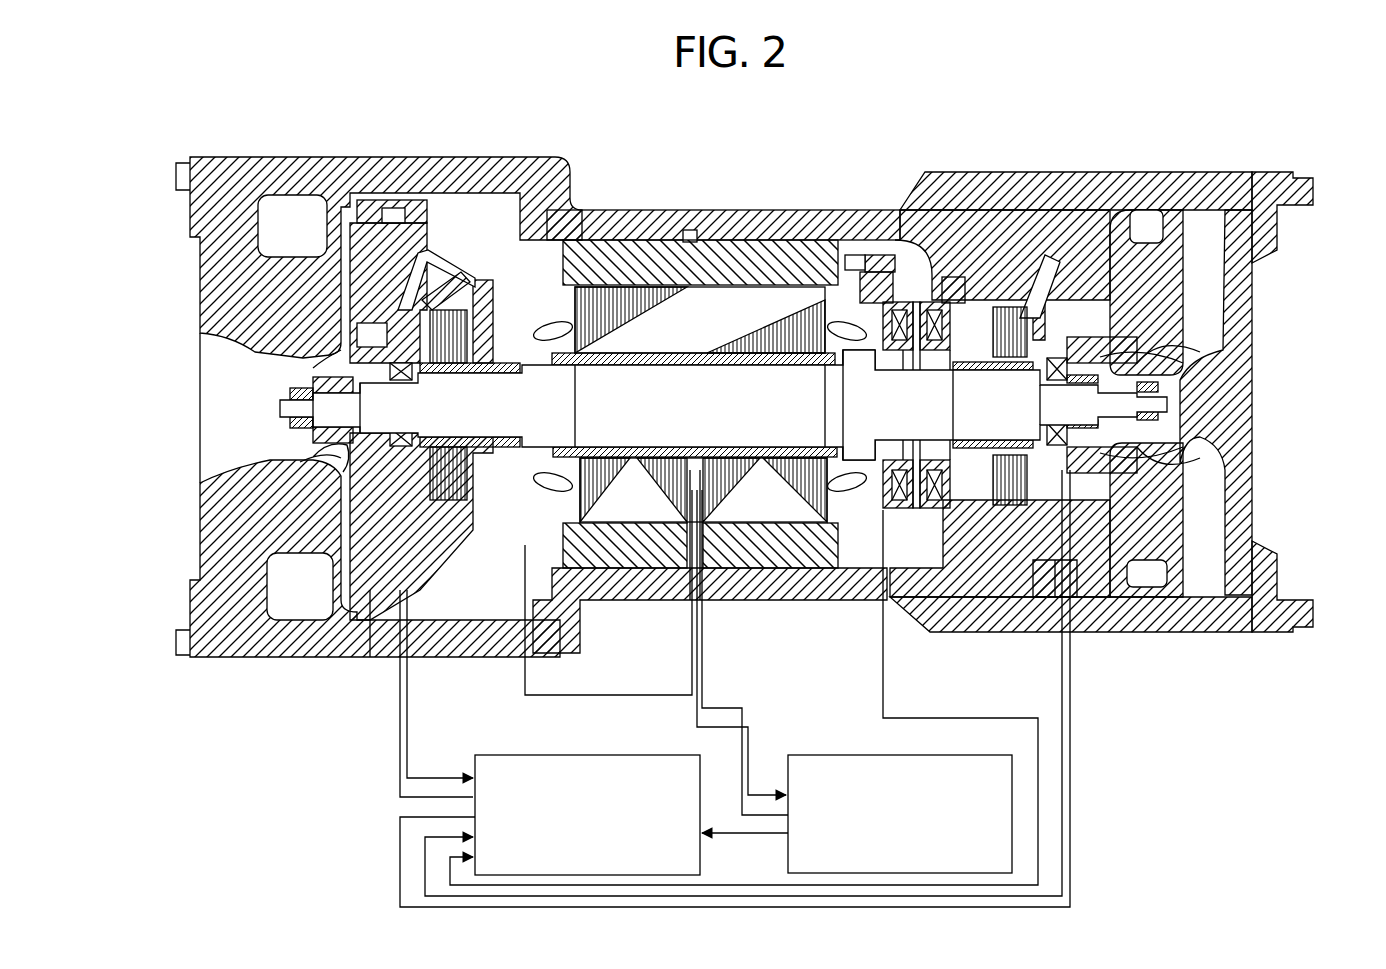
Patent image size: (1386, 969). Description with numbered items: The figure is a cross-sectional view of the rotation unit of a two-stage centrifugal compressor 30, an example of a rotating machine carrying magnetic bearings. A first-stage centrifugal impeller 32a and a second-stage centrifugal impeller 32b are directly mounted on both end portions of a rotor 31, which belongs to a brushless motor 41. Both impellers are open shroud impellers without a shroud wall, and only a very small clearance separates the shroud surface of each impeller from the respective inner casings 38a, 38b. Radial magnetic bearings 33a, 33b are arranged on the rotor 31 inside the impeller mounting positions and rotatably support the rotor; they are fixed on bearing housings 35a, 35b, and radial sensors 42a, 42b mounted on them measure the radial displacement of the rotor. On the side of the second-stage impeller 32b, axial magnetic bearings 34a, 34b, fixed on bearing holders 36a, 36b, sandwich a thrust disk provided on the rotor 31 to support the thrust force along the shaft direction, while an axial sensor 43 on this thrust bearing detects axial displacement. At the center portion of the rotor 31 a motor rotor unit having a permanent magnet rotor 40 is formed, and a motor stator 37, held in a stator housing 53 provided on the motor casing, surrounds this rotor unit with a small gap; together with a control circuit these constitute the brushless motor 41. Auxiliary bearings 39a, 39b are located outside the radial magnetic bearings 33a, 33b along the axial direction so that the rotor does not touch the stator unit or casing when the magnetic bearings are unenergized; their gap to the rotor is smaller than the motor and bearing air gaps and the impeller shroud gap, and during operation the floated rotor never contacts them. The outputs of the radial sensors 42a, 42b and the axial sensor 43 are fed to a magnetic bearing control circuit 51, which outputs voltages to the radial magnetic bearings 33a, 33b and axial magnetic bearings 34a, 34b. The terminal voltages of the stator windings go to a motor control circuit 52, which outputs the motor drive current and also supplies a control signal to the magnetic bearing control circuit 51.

The 2-stage centrifugal compressor 30 is at (986, 98).
The rotor 31 is at (632, 432).
The first-stage centrifugal impeller 32a is at (313, 368).
The second-stage centrifugal impeller 32b is at (1130, 372).
The radial magnetic bearing 33a is at (472, 345).
The radial magnetic bearing 33b is at (1065, 285).
The axial magnetic bearing 34a is at (937, 497).
The axial magnetic bearing 34b is at (1000, 497).
The bearing housing 35a is at (440, 300).
The bearing housing 35b is at (1006, 320).
The bearing holder 36a is at (884, 298).
The bearing holder 36b is at (927, 292).
The motor stator 37 is at (618, 305).
The inner casing 38a is at (228, 205).
The inner casing 38b is at (1177, 243).
The auxiliary bearing 39a is at (430, 550).
The auxiliary bearing 39b is at (1040, 455).
The permanent magnet rotor 40 is at (668, 330).
The brushless motor 41 is at (742, 284).
The radial sensor 42a is at (470, 282).
The radial sensor 42b is at (960, 262).
The axial sensor 43 is at (973, 535).
The magnetic bearing control circuit 51 is at (512, 753).
The motor control circuit 52 is at (852, 753).
The stator housing 53 is at (775, 545).